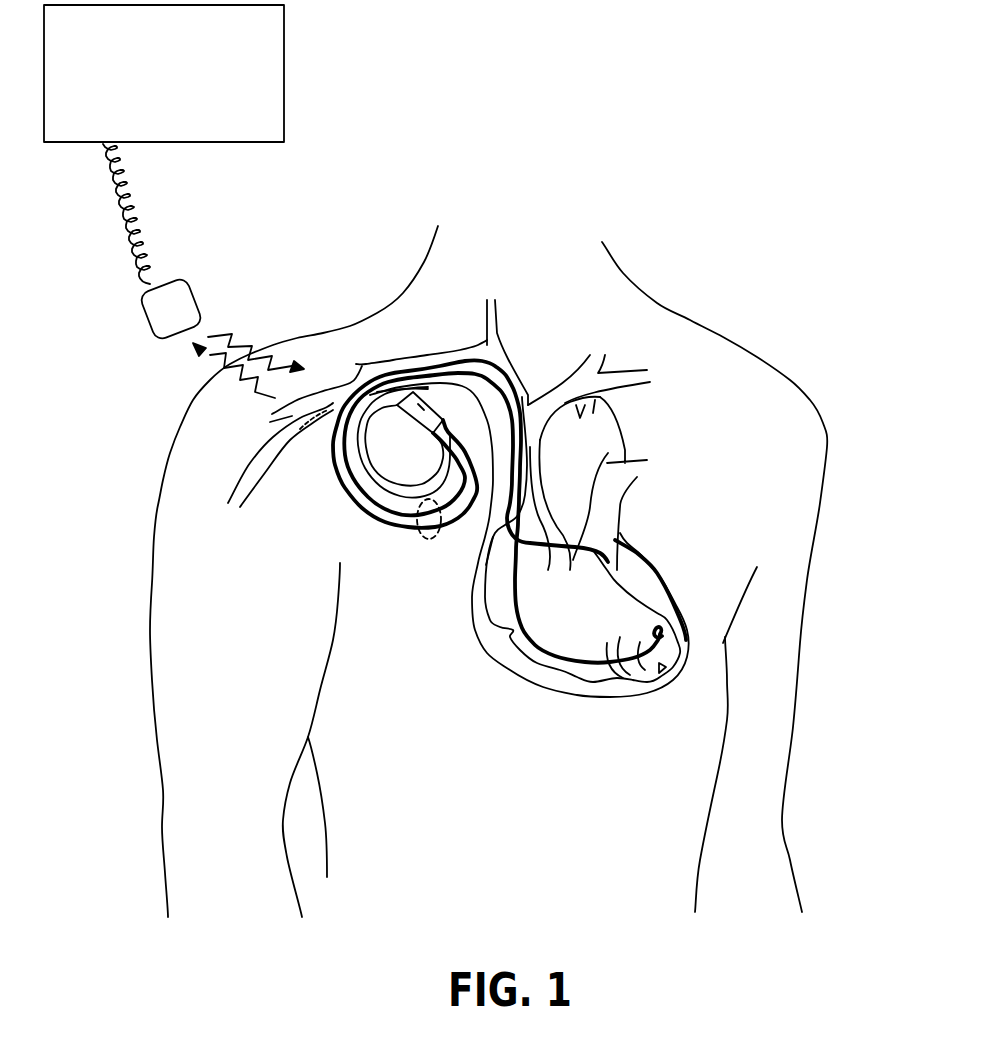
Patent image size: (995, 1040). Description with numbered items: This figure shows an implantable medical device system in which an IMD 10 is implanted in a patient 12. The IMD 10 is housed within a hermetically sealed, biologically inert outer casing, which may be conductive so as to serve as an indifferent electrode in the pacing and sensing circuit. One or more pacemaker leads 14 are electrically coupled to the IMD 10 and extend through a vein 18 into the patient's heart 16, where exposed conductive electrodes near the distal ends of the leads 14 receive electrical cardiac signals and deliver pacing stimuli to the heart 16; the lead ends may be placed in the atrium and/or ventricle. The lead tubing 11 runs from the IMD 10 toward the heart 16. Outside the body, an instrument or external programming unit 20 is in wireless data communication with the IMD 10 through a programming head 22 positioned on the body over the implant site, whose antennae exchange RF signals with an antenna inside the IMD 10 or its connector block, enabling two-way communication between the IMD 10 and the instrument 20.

The implantable medical device 10 is at (372, 472).
The lead 11 is at (440, 382).
The patient 12 is at (692, 320).
The pacemaker leads 14 is at (431, 540).
The heart 16 is at (553, 690).
The vein 18 is at (347, 382).
The instrument/external programming unit 20 is at (285, 100).
The programming head 22 is at (197, 302).